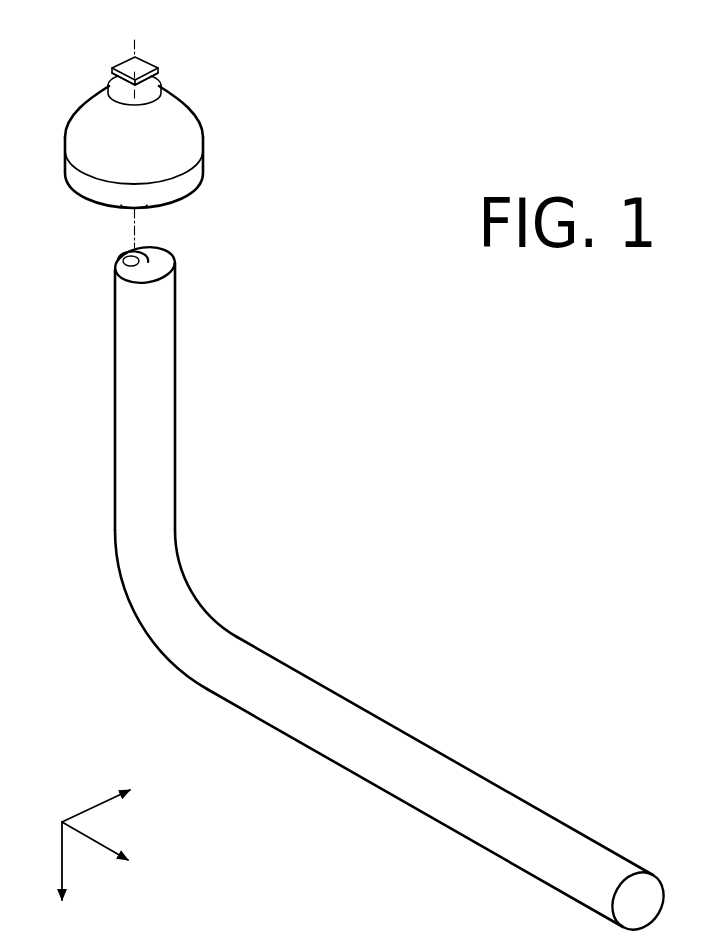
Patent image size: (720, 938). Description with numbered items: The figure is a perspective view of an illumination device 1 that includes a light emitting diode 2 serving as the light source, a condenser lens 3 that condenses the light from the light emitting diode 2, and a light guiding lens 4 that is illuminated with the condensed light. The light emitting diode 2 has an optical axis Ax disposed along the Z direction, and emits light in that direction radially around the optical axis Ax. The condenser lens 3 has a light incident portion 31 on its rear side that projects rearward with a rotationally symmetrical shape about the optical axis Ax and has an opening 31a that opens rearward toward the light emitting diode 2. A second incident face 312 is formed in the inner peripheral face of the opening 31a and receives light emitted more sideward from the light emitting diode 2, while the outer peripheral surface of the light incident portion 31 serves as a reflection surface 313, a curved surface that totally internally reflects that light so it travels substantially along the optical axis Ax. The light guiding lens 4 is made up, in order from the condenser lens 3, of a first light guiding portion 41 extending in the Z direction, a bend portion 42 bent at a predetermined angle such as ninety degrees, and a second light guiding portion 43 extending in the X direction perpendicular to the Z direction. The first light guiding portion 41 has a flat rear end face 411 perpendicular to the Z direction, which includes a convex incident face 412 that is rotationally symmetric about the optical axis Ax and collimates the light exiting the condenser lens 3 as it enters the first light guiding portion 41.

The illumination device 1 is at (428, 78).
The light emitting diode (LED) 2 is at (143, 66).
The condenser lens 3 is at (148, 124).
The light incident portion 31 is at (148, 124).
The opening 31a is at (153, 87).
The second incident face 312 is at (118, 92).
The reflection surface 313 is at (88, 117).
The optical axis Ax is at (133, 222).
The light guiding lens 4 is at (367, 580).
The first light guiding portion 41 is at (146, 376).
The rear end face 411 is at (165, 262).
The incident face 412 is at (126, 259).
The bend portion 42 is at (145, 615).
The second light guiding portion 43 is at (360, 767).